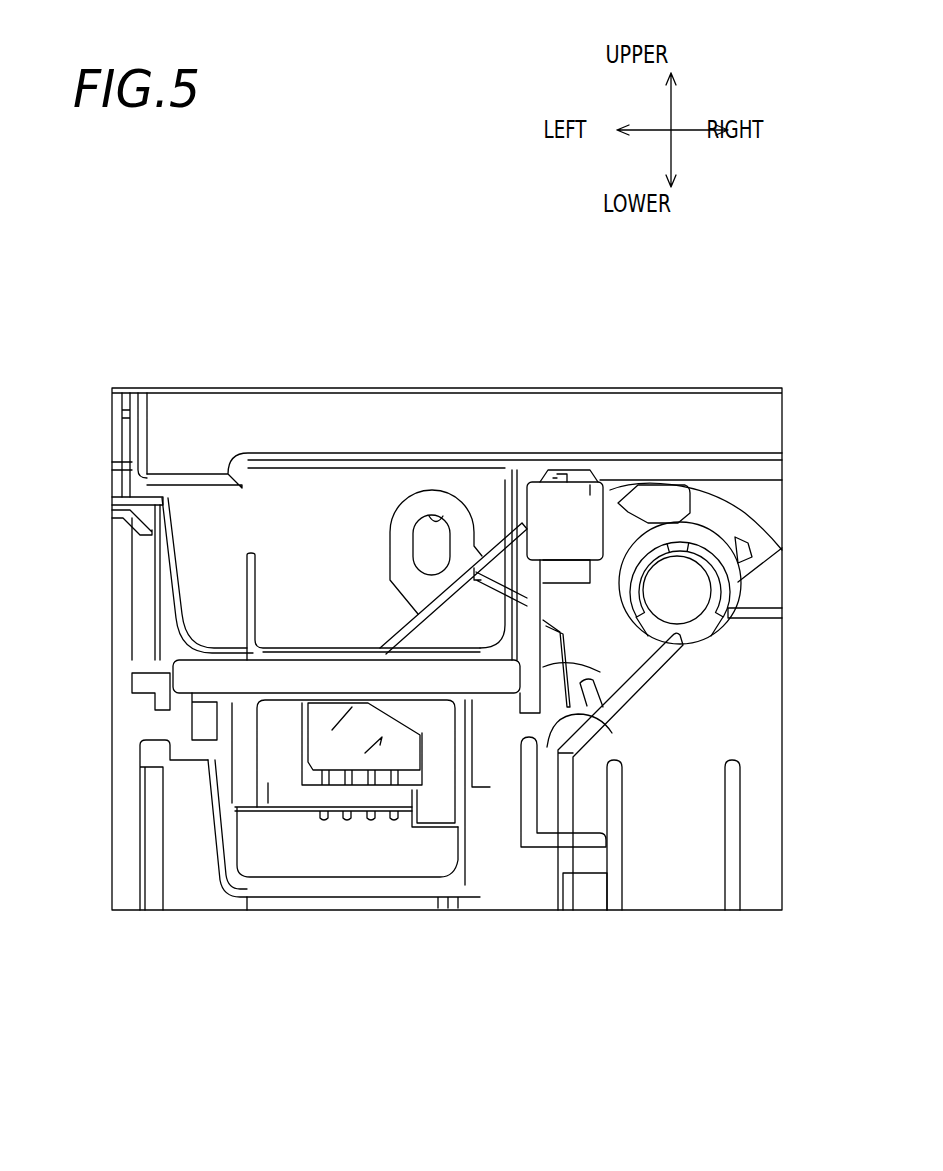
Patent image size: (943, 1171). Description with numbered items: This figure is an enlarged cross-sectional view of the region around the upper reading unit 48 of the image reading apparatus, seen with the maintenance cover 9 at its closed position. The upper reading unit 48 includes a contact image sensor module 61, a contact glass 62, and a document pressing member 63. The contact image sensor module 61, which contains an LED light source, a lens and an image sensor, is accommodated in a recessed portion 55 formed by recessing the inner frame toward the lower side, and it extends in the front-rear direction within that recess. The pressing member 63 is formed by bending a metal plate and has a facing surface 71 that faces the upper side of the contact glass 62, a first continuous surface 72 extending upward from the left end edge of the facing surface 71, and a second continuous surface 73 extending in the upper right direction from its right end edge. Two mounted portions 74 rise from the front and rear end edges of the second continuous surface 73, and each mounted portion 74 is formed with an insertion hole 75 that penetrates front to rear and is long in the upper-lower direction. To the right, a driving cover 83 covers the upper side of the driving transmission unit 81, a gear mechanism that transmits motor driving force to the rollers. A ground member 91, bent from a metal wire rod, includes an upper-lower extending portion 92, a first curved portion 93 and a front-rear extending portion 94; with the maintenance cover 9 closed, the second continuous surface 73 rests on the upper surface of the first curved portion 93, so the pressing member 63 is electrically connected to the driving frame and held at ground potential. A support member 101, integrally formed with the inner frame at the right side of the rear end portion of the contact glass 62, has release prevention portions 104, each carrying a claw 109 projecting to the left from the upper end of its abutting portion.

The maintenance cover 9 is at (396, 374).
The upper reading unit 48 is at (218, 905).
The recessed portion 55 is at (455, 878).
The contact image sensor module 61 is at (345, 865).
The contact glass 62 is at (185, 672).
The document pressing member 63 is at (247, 588).
The facing surface 71 is at (324, 668).
The first continuous surface 72 is at (245, 620).
The second continuous surface 73 is at (435, 604).
The mounted portion 74 is at (396, 542).
The insertion hole 75 is at (438, 514).
The driving transmission unit 81 is at (738, 490).
The driving cover 83 is at (673, 472).
The ground member 91 is at (560, 622).
The upper-lower extending portion 92 is at (580, 667).
The first curved portion 93 is at (520, 595).
The front-rear extending portion 94 is at (565, 594).
The support member 101 is at (600, 480).
The release prevention portion 104 is at (588, 497).
The claw 109 is at (566, 515).